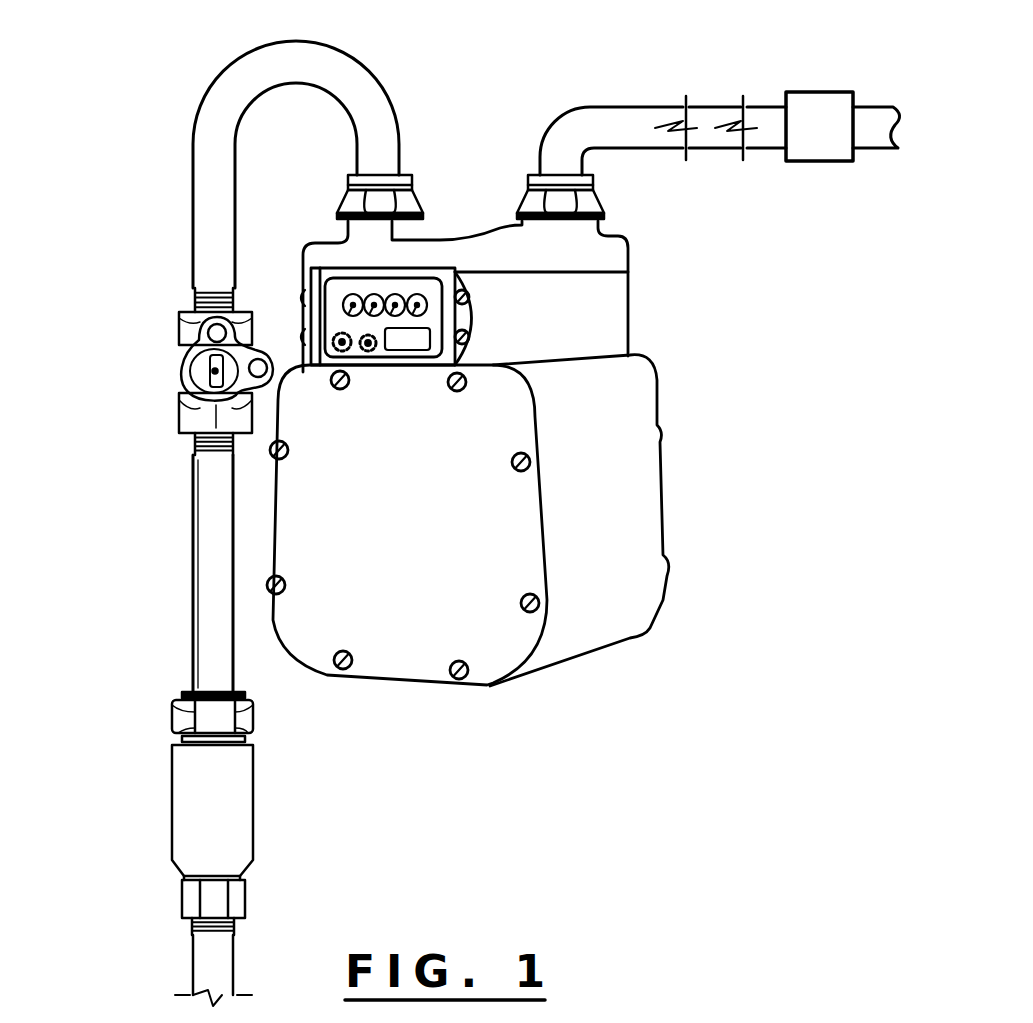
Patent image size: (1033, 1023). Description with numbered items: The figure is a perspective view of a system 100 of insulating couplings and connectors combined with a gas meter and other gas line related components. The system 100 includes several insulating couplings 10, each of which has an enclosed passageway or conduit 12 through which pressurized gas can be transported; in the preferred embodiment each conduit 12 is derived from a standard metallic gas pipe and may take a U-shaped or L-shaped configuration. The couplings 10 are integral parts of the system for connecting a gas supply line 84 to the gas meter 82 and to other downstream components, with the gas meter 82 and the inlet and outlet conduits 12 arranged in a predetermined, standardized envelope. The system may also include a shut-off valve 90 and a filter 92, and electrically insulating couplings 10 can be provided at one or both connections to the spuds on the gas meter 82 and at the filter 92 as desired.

The insulating coupling 10 is at (340, 196).
The conduit 12 is at (343, 68).
The gas meter 82 is at (420, 564).
The gas supply line 84 is at (233, 970).
The shut-off valve 90 is at (180, 375).
The filter 92 is at (253, 775).
The system 100 is at (613, 702).